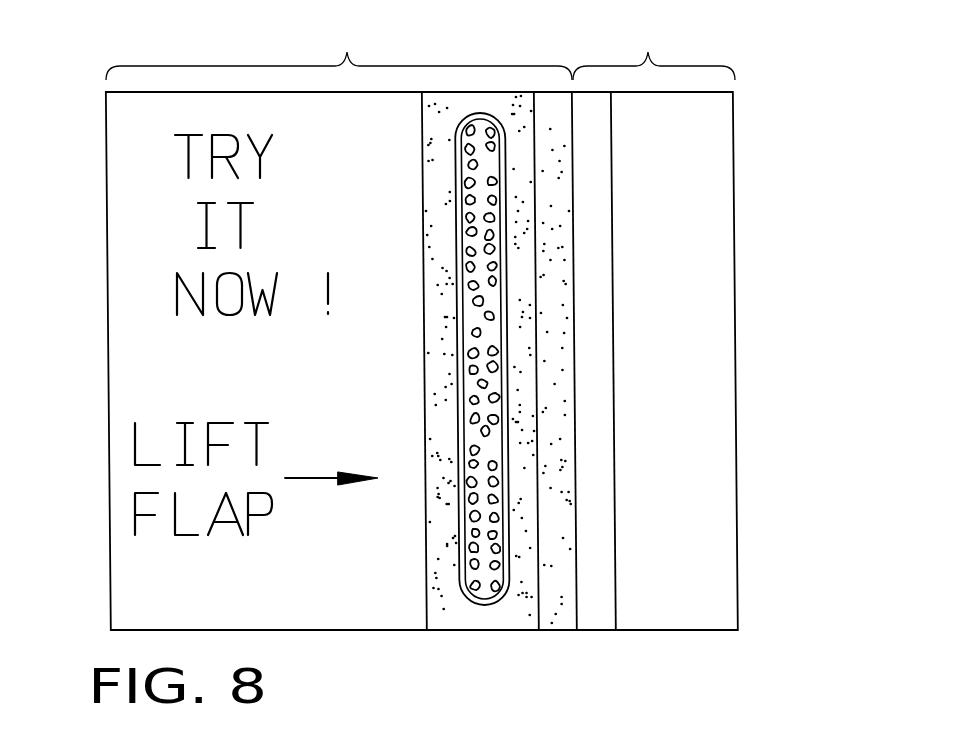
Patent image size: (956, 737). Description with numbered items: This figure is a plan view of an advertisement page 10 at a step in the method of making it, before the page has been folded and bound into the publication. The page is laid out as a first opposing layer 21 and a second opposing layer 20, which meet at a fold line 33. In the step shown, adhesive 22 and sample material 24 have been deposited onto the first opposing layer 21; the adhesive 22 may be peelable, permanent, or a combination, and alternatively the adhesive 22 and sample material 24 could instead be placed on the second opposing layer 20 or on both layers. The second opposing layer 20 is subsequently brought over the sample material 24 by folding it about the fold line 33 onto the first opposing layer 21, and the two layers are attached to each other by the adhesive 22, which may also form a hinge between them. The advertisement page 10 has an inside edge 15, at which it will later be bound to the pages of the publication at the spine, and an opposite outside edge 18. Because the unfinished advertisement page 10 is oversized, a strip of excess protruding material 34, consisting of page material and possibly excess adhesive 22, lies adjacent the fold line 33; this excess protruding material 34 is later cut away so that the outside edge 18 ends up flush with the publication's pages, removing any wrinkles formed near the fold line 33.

The advertisement page 10 is at (143, 53).
The inside edge 15 is at (422, 361).
The outside edge 18 is at (536, 361).
The second opposing layer 20 is at (654, 50).
The first opposing layer 21 is at (339, 50).
The adhesive 22 is at (479, 361).
The sample material 24 is at (482, 359).
The fold line 33 is at (574, 361).
The excess protruding material 34 is at (577, 361).